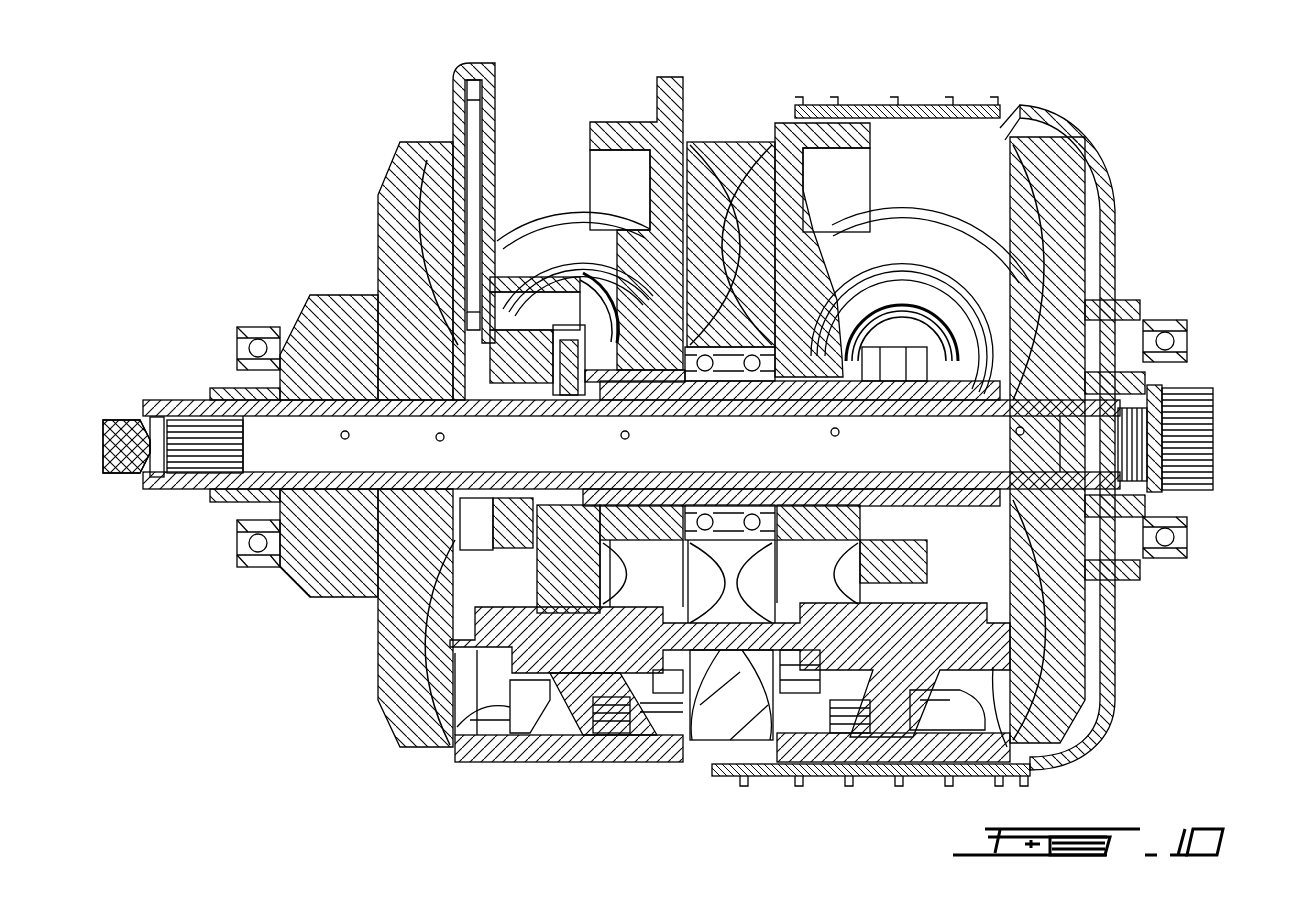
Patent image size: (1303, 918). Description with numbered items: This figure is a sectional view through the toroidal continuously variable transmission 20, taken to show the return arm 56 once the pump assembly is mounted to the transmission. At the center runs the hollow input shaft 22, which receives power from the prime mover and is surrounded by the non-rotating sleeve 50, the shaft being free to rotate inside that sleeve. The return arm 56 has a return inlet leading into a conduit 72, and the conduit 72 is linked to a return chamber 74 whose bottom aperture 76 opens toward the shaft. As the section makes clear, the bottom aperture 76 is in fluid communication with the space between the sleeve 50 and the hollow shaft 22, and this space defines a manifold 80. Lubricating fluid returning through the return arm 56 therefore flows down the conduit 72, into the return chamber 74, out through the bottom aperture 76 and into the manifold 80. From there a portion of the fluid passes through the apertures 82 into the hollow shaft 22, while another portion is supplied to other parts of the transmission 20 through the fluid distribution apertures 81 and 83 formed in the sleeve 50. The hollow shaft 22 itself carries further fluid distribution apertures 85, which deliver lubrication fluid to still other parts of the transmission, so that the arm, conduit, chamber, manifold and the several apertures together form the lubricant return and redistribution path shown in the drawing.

The toroidal continuously variable transmission 20 is at (1212, 178).
The hollow input shaft 22 is at (1187, 330).
The sleeve 50 is at (920, 313).
The return arm 56 is at (487, 80).
The conduit 72 is at (478, 118).
The return chamber 74 is at (515, 308).
The bottom aperture 76 is at (568, 332).
The manifold 80 is at (842, 330).
The fluid distribution aperture 81 is at (732, 498).
The apertures 82 is at (838, 435).
The fluid distribution aperture 83 is at (573, 500).
The fluid distribution apertures 85 is at (440, 442).